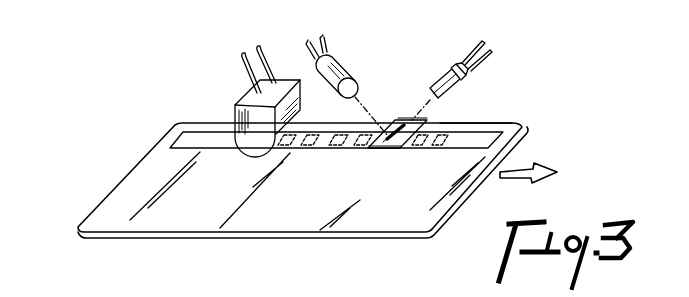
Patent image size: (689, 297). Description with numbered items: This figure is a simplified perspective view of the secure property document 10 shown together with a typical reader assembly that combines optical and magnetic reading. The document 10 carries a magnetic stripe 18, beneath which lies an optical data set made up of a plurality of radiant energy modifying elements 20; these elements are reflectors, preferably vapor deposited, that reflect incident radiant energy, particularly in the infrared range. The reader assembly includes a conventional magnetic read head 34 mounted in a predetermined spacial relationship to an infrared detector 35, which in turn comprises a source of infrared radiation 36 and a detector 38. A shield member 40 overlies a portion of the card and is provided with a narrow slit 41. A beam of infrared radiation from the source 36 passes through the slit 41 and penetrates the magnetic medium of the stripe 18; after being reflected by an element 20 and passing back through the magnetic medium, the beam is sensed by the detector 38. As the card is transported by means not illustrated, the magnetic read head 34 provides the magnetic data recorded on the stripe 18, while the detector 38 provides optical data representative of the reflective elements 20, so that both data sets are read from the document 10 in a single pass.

The secure property document 10 is at (119, 186).
The magnetic stripe 18 is at (185, 133).
The radiant energy modifying elements 20 is at (459, 109).
The magnetic read head 34 is at (247, 99).
The infrared detector 35 is at (476, 78).
The source of infrared radiation 36 is at (441, 70).
The detector 38 is at (338, 67).
The shield member 40 is at (396, 121).
The slit 41 is at (387, 146).